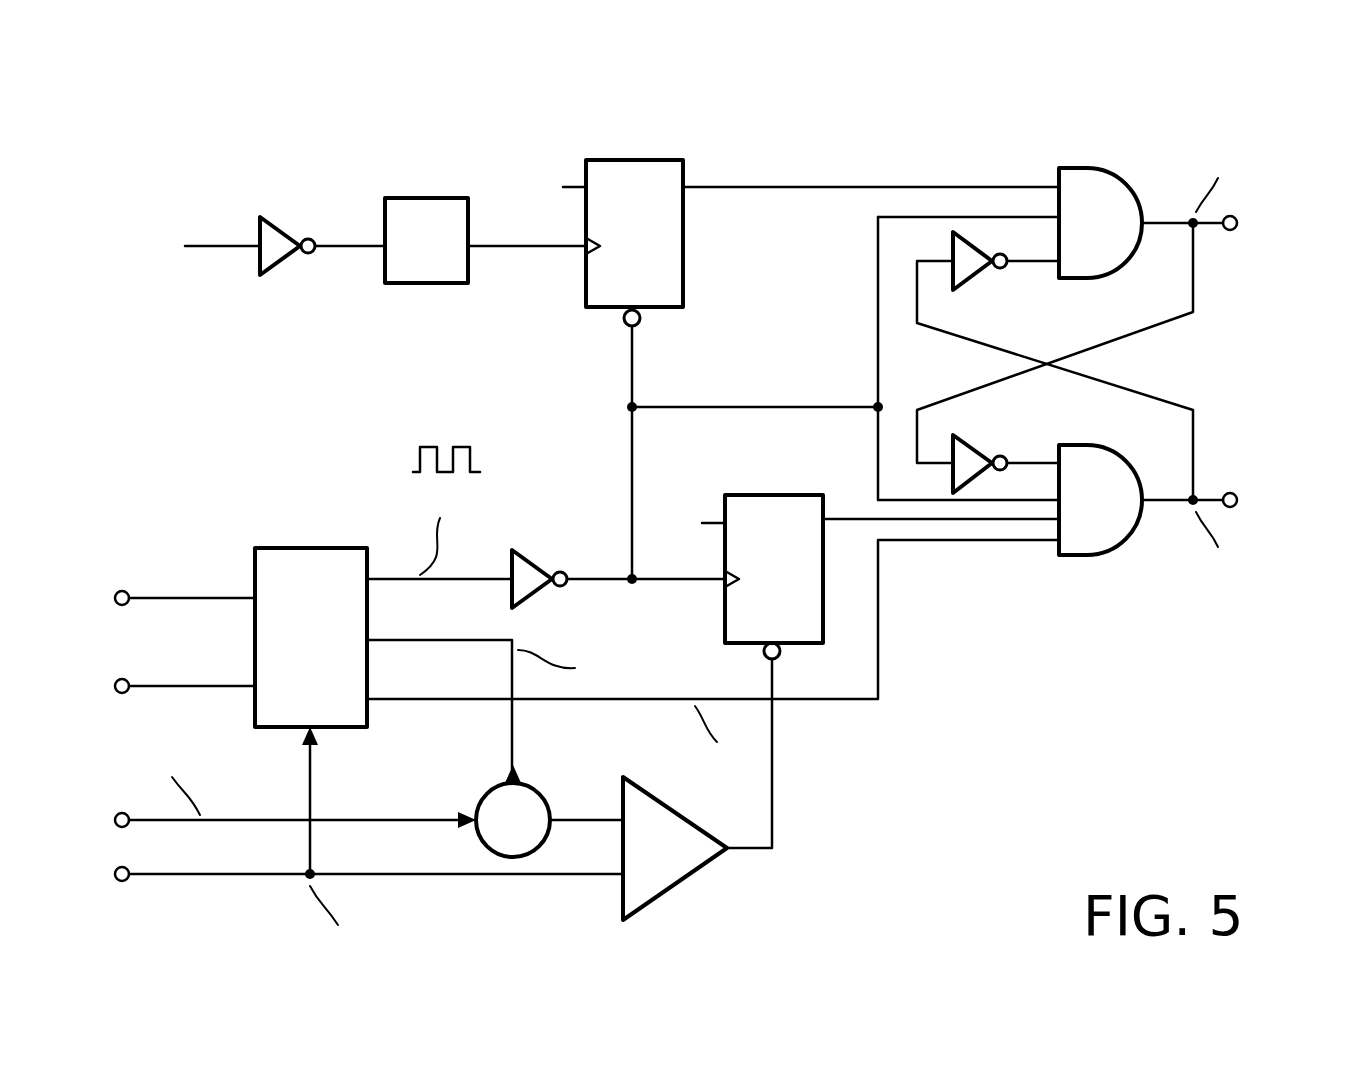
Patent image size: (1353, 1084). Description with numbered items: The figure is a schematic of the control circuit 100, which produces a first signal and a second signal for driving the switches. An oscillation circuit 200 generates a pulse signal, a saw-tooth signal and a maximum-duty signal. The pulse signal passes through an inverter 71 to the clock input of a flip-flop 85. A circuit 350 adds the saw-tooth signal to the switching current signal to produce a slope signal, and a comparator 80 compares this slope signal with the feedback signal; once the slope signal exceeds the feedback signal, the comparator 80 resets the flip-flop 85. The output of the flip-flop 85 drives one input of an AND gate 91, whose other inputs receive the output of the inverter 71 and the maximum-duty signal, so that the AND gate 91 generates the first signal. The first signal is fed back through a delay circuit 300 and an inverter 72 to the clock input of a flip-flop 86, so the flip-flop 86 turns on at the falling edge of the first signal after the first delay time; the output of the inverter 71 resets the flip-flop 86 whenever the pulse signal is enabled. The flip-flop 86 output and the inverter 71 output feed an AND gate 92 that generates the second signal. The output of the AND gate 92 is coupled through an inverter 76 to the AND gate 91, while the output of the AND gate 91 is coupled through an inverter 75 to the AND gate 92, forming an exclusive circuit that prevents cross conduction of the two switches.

The control circuit 100 is at (1226, 78).
The inverter 72 is at (283, 268).
The delay circuit 300 is at (433, 285).
The flip-flop 86 is at (686, 292).
The flip-flop 85 is at (778, 492).
The AND gate 92 is at (1088, 162).
The AND gate 91 is at (1088, 558).
The inverter 75 is at (975, 283).
The inverter 76 is at (978, 442).
The inverter 71 is at (535, 560).
The oscillation circuit 200 is at (262, 545).
The circuit 350 is at (543, 790).
The comparator 80 is at (675, 890).